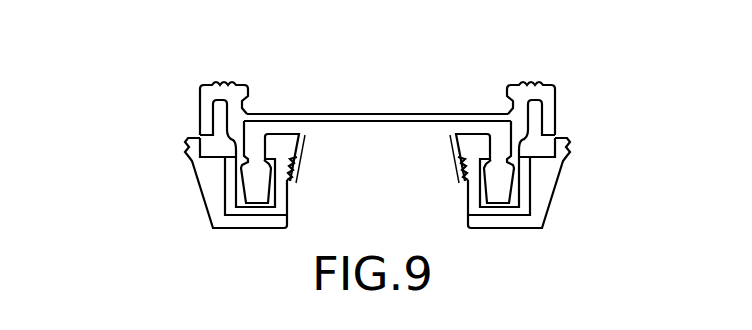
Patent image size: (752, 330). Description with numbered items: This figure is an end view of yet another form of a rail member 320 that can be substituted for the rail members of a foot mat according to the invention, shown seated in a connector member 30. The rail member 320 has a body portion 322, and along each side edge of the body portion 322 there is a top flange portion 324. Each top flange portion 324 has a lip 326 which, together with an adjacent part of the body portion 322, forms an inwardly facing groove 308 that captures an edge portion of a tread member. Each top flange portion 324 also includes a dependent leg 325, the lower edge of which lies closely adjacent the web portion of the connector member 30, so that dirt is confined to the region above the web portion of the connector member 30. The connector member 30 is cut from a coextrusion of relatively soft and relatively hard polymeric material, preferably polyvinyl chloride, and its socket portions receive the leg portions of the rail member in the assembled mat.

The connector member 30 is at (555, 207).
The inwardly facing groove 308 is at (248, 114).
The rail member 320 is at (166, 77).
The body portion 322 is at (388, 113).
The top flange portion 324 is at (212, 86).
The dependent leg 325 is at (198, 113).
The lip 326 is at (251, 86).